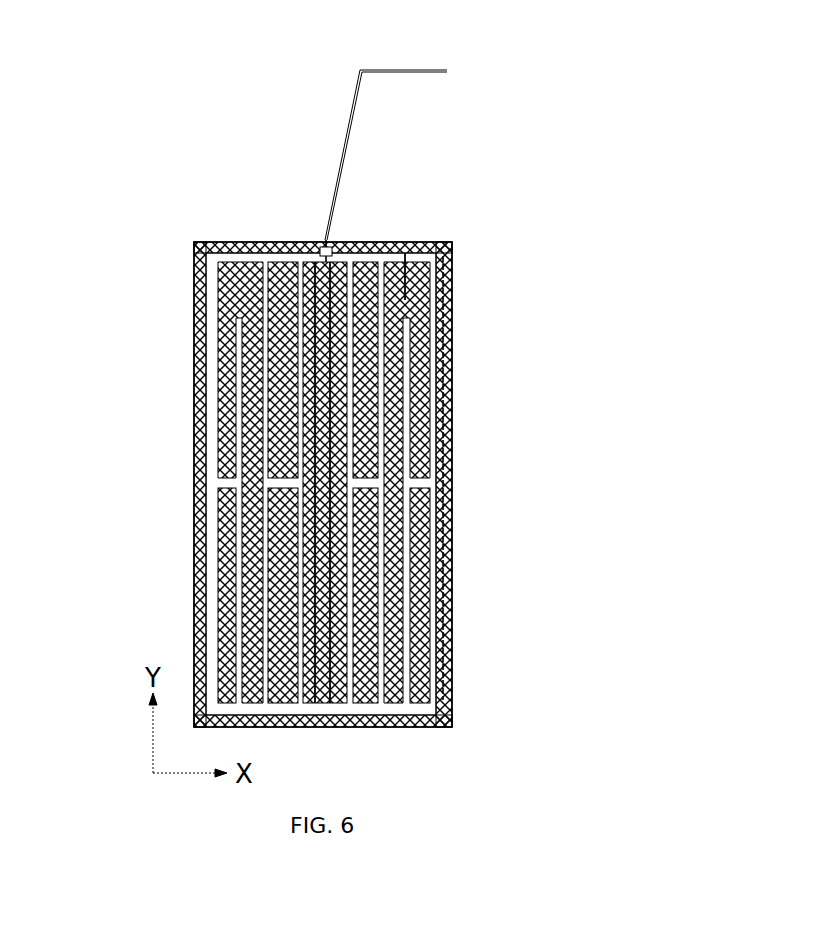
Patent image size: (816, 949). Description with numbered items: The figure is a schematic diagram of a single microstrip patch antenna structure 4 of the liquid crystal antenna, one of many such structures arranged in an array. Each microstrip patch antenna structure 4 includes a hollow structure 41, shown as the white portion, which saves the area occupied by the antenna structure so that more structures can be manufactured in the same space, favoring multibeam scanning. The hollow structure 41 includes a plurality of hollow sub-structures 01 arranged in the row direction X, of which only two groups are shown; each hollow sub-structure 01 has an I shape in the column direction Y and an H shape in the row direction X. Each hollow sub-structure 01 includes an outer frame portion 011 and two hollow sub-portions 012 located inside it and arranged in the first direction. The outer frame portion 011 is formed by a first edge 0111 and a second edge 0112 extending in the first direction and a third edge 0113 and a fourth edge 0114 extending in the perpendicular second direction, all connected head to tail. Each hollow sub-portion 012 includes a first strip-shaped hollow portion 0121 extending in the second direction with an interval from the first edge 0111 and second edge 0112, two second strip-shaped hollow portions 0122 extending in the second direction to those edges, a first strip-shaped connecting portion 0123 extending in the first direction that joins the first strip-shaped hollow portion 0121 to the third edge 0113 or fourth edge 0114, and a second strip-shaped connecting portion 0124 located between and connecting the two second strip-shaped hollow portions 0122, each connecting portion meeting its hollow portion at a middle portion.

The microstrip patch antenna structure 4 is at (393, 378).
The hollow structure 41 is at (404, 242).
The hollow sub-structure 01 is at (200, 330).
The outer frame portion 011 is at (329, 486).
The first edge 0111 is at (228, 262).
The second edge 0112 is at (316, 712).
The third edge 0113 is at (205, 400).
The fourth edge 0114 is at (447, 418).
The hollow sub-portion 012 is at (323, 482).
The first strip-shaped hollow portion 0121 is at (230, 560).
The second strip-shaped hollow portion 0122 is at (220, 600).
The first strip-shaped connecting portion 0123 is at (227, 482).
The second strip-shaped connecting portion 0124 is at (245, 470).